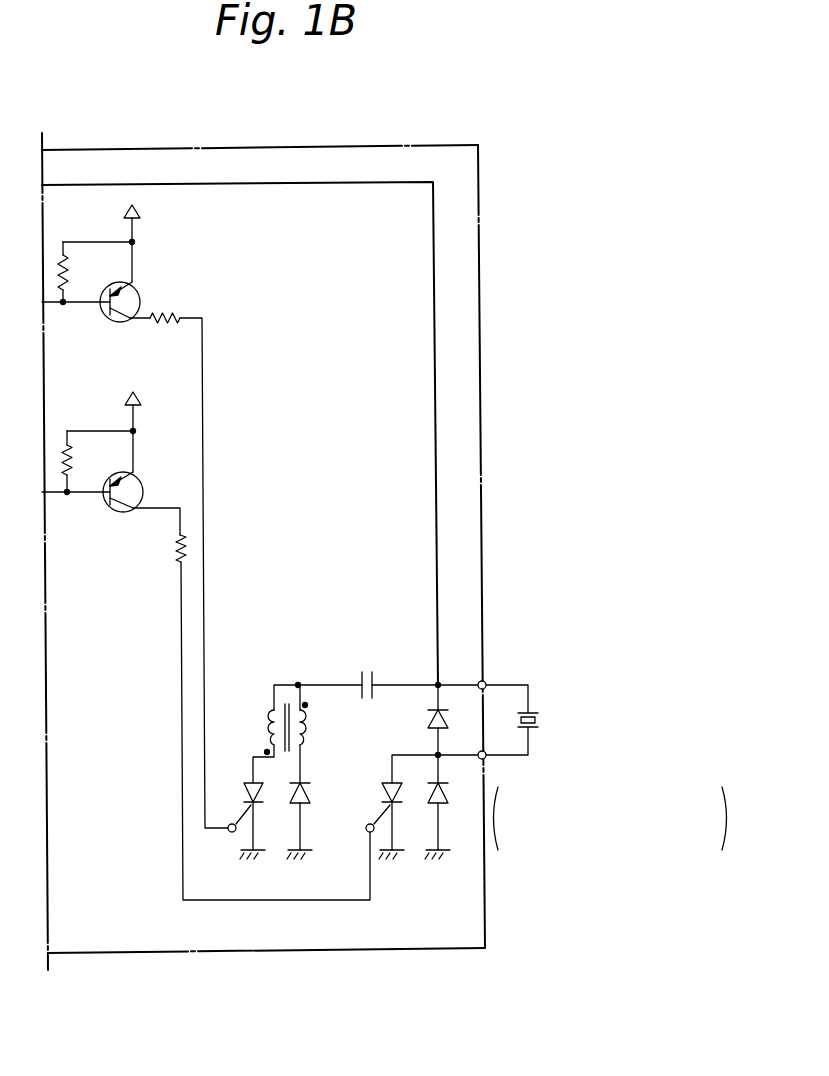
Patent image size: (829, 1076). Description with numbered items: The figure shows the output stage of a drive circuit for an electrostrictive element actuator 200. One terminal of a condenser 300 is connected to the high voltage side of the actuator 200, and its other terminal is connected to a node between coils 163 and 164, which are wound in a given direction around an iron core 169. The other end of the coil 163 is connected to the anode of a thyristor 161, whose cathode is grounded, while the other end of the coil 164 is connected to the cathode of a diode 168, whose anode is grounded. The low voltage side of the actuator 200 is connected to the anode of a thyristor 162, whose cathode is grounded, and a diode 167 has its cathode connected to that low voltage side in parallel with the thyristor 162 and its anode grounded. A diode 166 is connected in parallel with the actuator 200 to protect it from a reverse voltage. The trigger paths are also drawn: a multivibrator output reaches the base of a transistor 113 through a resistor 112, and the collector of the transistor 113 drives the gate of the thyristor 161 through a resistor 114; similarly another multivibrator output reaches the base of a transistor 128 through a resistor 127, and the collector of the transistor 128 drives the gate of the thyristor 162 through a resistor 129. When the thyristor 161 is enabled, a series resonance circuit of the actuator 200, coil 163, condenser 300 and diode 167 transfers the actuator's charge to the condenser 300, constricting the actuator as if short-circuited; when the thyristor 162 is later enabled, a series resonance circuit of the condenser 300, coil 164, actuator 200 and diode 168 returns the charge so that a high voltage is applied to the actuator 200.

The resistor 112 is at (69, 272).
The transistor 113 is at (141, 296).
The resistor 114 is at (165, 324).
The resistor 127 is at (74, 460).
The transistor 128 is at (144, 488).
The resistor 129 is at (175, 548).
The thyristor 161 is at (239, 796).
The thyristor 162 is at (386, 777).
The coil 163 is at (269, 724).
The coil 164 is at (308, 725).
The diode 166 is at (426, 716).
The diode 167 is at (452, 790).
The diode 168 is at (313, 795).
The iron core 169 is at (287, 699).
The electrostrictive element actuator 200 is at (543, 722).
The condenser 300 is at (372, 666).